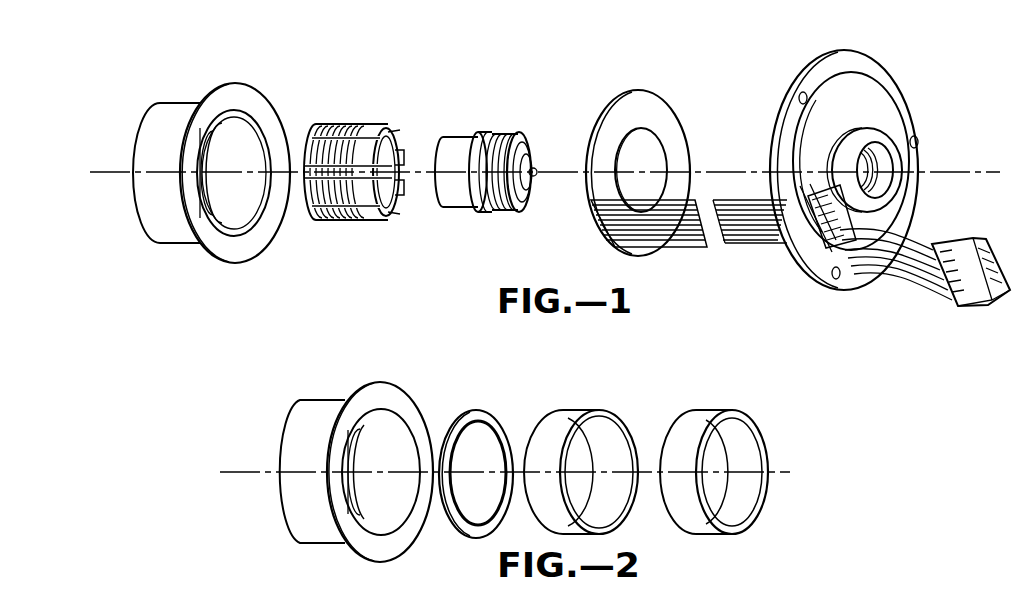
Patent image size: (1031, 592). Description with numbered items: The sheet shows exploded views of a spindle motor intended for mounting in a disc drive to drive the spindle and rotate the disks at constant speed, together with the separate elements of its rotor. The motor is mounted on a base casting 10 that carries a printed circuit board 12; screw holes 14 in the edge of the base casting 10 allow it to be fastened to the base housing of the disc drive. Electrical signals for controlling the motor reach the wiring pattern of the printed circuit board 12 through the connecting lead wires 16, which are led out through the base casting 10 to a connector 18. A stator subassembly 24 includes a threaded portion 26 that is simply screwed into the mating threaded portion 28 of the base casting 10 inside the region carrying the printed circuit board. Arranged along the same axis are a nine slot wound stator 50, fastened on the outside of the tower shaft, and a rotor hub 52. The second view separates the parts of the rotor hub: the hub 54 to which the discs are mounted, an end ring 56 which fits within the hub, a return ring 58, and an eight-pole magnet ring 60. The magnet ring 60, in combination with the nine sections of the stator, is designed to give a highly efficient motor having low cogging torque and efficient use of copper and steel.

In FIG. 1, the base casting 10 is at (880, 66).
In FIG. 1, the printed circuit board 12 is at (670, 120).
In FIG. 1, the screw holes 14 is at (803, 92).
In FIG. 1, the connecting lead wires 16 is at (673, 248).
In FIG. 1, the connector 18 is at (958, 300).
In FIG. 1, the stator subassembly 24 is at (476, 128).
In FIG. 1, the threaded portion 26 is at (525, 128).
In FIG. 1, the mating threaded portion 28 is at (888, 180).
In FIG. 1, the nine slot wound stator 50 is at (350, 218).
In FIG. 1, the rotor hub 52 is at (173, 240).
In FIG. 2, the hub 54 is at (381, 385).
In FIG. 2, the end ring 56 is at (486, 410).
In FIG. 2, the return ring 58 is at (588, 408).
In FIG. 2, the eight-pole magnet ring 60 is at (716, 410).